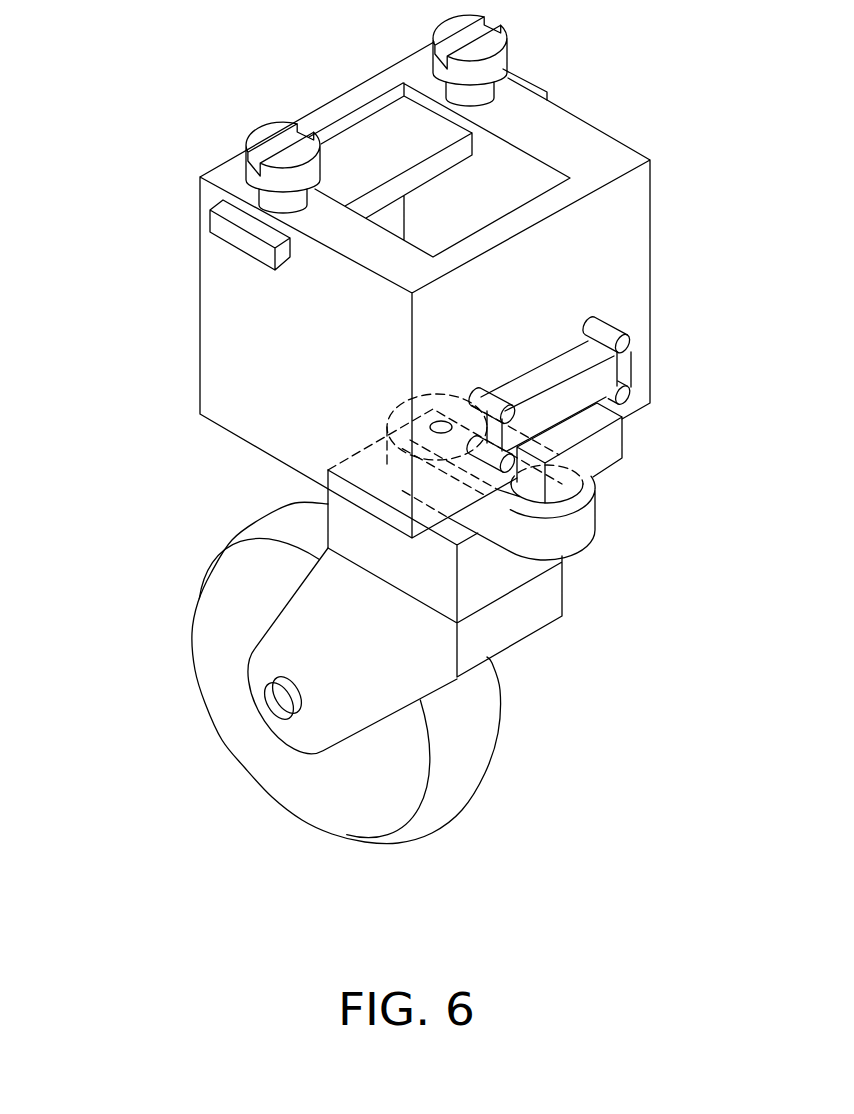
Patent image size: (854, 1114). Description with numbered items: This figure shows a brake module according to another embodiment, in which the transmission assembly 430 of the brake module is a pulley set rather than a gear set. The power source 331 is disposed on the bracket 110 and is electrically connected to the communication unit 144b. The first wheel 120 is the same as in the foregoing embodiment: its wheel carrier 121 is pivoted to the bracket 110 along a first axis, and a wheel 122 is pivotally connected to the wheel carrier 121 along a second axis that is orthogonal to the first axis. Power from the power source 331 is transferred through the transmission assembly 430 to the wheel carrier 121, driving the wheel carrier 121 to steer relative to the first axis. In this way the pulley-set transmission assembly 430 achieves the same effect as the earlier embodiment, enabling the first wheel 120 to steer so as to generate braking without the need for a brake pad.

The bracket 110 is at (617, 214).
The communication unit 144b is at (580, 383).
The power source 331 is at (603, 447).
The transmission assembly 430 is at (602, 517).
The first wheel 120 is at (303, 626).
The wheel carrier 121 is at (387, 562).
The wheel 122 is at (276, 700).